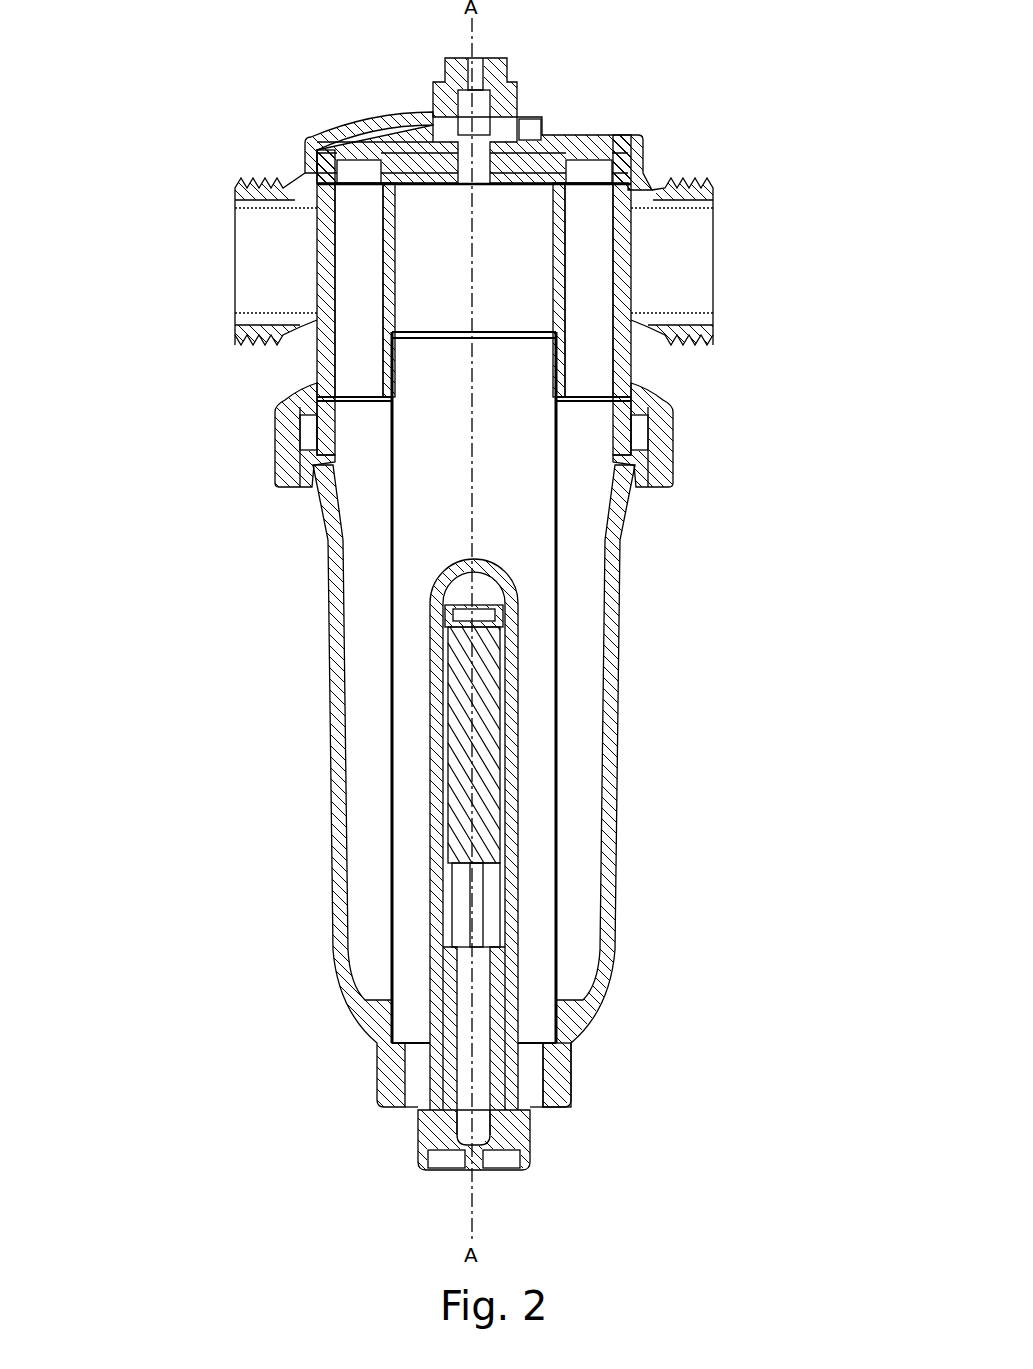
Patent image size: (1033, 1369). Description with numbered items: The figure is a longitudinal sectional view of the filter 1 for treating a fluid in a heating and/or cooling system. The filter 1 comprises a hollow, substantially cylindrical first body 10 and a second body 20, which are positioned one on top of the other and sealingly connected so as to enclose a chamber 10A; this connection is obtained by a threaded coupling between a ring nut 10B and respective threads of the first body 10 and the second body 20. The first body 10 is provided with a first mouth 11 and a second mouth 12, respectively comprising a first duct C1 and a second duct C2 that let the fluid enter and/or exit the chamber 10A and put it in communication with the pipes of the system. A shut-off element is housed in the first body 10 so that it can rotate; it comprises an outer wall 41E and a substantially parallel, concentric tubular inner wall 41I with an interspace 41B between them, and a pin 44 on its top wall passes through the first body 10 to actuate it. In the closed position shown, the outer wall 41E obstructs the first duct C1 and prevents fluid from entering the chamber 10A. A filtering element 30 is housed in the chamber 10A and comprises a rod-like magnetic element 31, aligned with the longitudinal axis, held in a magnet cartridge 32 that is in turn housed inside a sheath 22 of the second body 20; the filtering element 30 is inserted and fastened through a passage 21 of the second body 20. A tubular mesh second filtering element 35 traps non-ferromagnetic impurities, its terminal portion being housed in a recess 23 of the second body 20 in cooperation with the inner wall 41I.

The filter 1 is at (113, 657).
The first body 10 is at (455, 311).
The chamber 10A is at (578, 497).
The ring nut 10B is at (302, 432).
The first mouth 11 is at (751, 248).
The second mouth 12 is at (189, 248).
The first duct C1 is at (672, 258).
The second duct C2 is at (268, 292).
The second body 20 is at (459, 786).
The passage 21 is at (517, 1120).
The sheath 22 is at (442, 579).
The recess 23 is at (543, 1040).
The filtering element 30 is at (530, 792).
The magnetic element 31 is at (483, 830).
The magnet cartridge 32 is at (485, 610).
The second filtering element 35 is at (558, 710).
The interspace 41B is at (355, 217).
The outer wall 41E is at (320, 247).
The inner wall 41I is at (387, 280).
The pin 44 is at (450, 72).